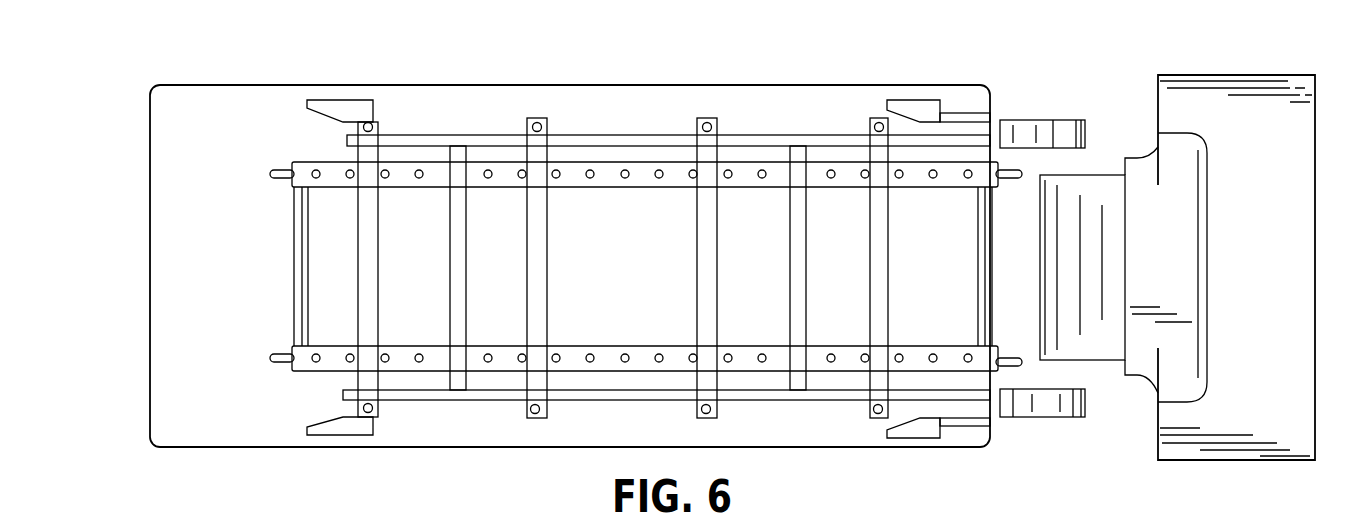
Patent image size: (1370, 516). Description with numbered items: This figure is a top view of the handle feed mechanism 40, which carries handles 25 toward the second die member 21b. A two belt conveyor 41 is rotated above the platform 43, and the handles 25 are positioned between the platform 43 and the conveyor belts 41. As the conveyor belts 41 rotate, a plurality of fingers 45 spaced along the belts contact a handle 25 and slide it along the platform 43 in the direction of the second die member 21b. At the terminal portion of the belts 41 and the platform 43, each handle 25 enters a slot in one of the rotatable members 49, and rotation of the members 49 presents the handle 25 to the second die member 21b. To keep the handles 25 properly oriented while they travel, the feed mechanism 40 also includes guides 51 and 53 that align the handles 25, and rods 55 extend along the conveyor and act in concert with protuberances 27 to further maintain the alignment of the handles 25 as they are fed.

The platform 43 is at (258, 85).
The second die member 21b is at (1222, 88).
The rotatable members 49 is at (1062, 133).
The rods 55 is at (763, 135).
The two belt conveyor 41 is at (605, 162).
The fingers 45 is at (424, 170).
The handle feed mechanism 40 is at (575, 465).
The handles 25 is at (363, 290).
The guide 51 is at (368, 110).
The guide 53 is at (922, 108).
The protuberances 27 is at (373, 125).